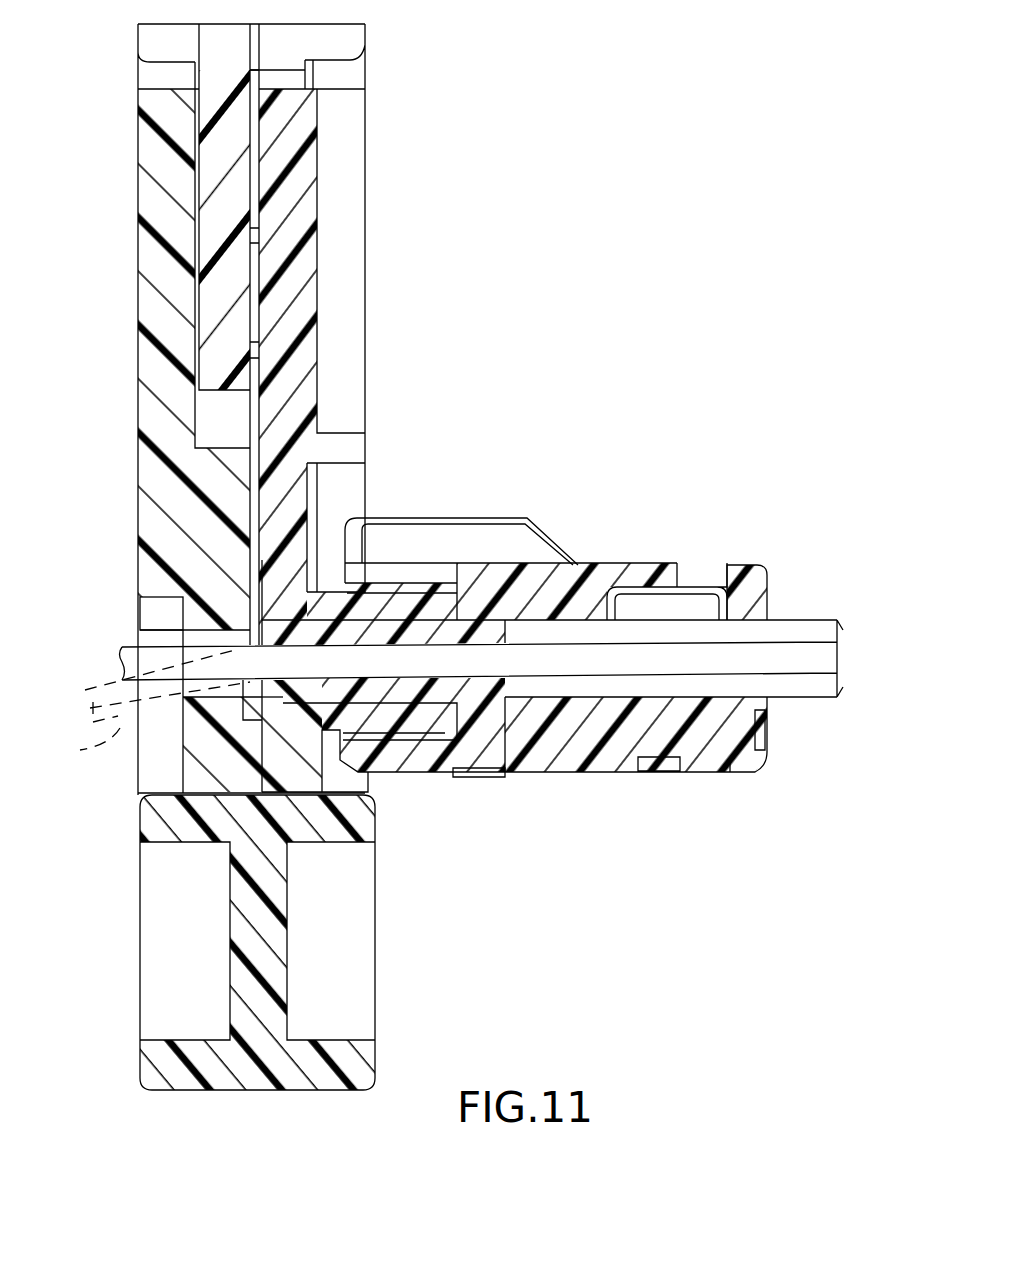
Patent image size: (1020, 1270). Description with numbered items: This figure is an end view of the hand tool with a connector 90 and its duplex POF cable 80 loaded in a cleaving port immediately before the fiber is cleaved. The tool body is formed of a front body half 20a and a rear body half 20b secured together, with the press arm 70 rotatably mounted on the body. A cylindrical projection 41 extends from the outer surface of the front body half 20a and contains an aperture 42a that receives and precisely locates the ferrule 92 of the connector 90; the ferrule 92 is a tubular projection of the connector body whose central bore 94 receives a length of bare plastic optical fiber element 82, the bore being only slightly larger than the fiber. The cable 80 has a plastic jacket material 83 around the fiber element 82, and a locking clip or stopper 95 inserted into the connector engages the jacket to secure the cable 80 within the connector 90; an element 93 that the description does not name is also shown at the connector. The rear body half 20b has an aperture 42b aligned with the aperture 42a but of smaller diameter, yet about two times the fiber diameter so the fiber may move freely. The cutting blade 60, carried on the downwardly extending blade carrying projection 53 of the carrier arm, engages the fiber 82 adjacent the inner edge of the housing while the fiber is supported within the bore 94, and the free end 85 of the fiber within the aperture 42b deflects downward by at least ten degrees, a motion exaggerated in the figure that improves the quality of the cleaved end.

The front body half 20a is at (345, 222).
The rear body half 20b is at (165, 277).
The blade carrying projection 53 is at (230, 190).
The cutting blade 60 is at (255, 488).
The spring 93 is at (340, 545).
The central bore 94 is at (320, 668).
The connector 90 is at (577, 528).
The locking clip 95 is at (678, 590).
The plastic jacket material 83 is at (740, 630).
The duplex POF cable 80 is at (782, 600).
The plastic optical fiber element 82 is at (80, 750).
The free end 85 is at (170, 605).
The cylindrical projections 41 is at (387, 713).
The aperture 42a is at (420, 687).
The apertures 42b is at (233, 693).
The ferrule 92 is at (280, 703).
The press arm 70 is at (220, 1092).